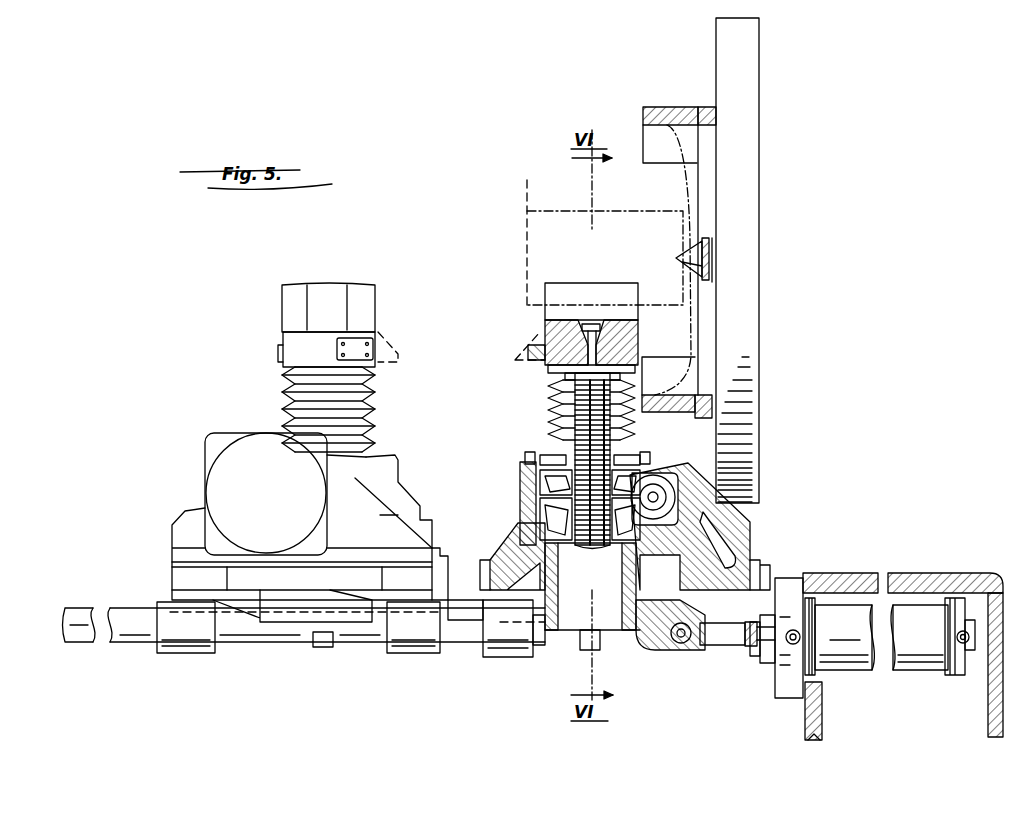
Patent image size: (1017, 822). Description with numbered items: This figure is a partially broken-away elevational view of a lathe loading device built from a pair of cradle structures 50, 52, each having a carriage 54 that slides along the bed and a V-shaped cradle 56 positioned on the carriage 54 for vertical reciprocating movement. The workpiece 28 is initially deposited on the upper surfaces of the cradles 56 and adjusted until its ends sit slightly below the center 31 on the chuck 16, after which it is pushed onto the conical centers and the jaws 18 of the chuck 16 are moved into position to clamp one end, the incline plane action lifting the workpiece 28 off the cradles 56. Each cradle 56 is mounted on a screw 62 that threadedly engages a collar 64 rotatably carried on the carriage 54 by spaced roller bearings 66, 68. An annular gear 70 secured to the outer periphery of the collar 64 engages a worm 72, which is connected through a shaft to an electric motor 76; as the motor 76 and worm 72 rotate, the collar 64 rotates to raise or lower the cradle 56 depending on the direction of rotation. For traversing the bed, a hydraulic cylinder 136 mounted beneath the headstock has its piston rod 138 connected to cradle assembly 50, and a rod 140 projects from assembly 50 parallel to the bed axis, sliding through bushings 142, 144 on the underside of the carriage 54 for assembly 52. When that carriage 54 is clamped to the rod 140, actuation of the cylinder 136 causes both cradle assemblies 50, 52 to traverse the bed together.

The chuck 16 is at (730, 44).
The jaws 18 is at (670, 107).
The workpiece 28 is at (580, 211).
The center 31 is at (676, 258).
The cradle structure 50 is at (607, 640).
The cradle structure 52 is at (314, 649).
The carriage 54 is at (172, 547).
The cradle 56 is at (282, 313).
The screw 62 is at (594, 552).
The collar 64 is at (540, 494).
The roller bearing 66 is at (545, 533).
The roller bearing 68 is at (525, 453).
The annular gear 70 is at (662, 478).
The worm 72 is at (675, 485).
The electric motor 76 is at (212, 482).
The hydraulic cylinder 136 is at (906, 656).
The piston rod 138 is at (745, 647).
The rod 140 is at (472, 643).
The bushing 142 is at (418, 653).
The bushing 144 is at (170, 653).